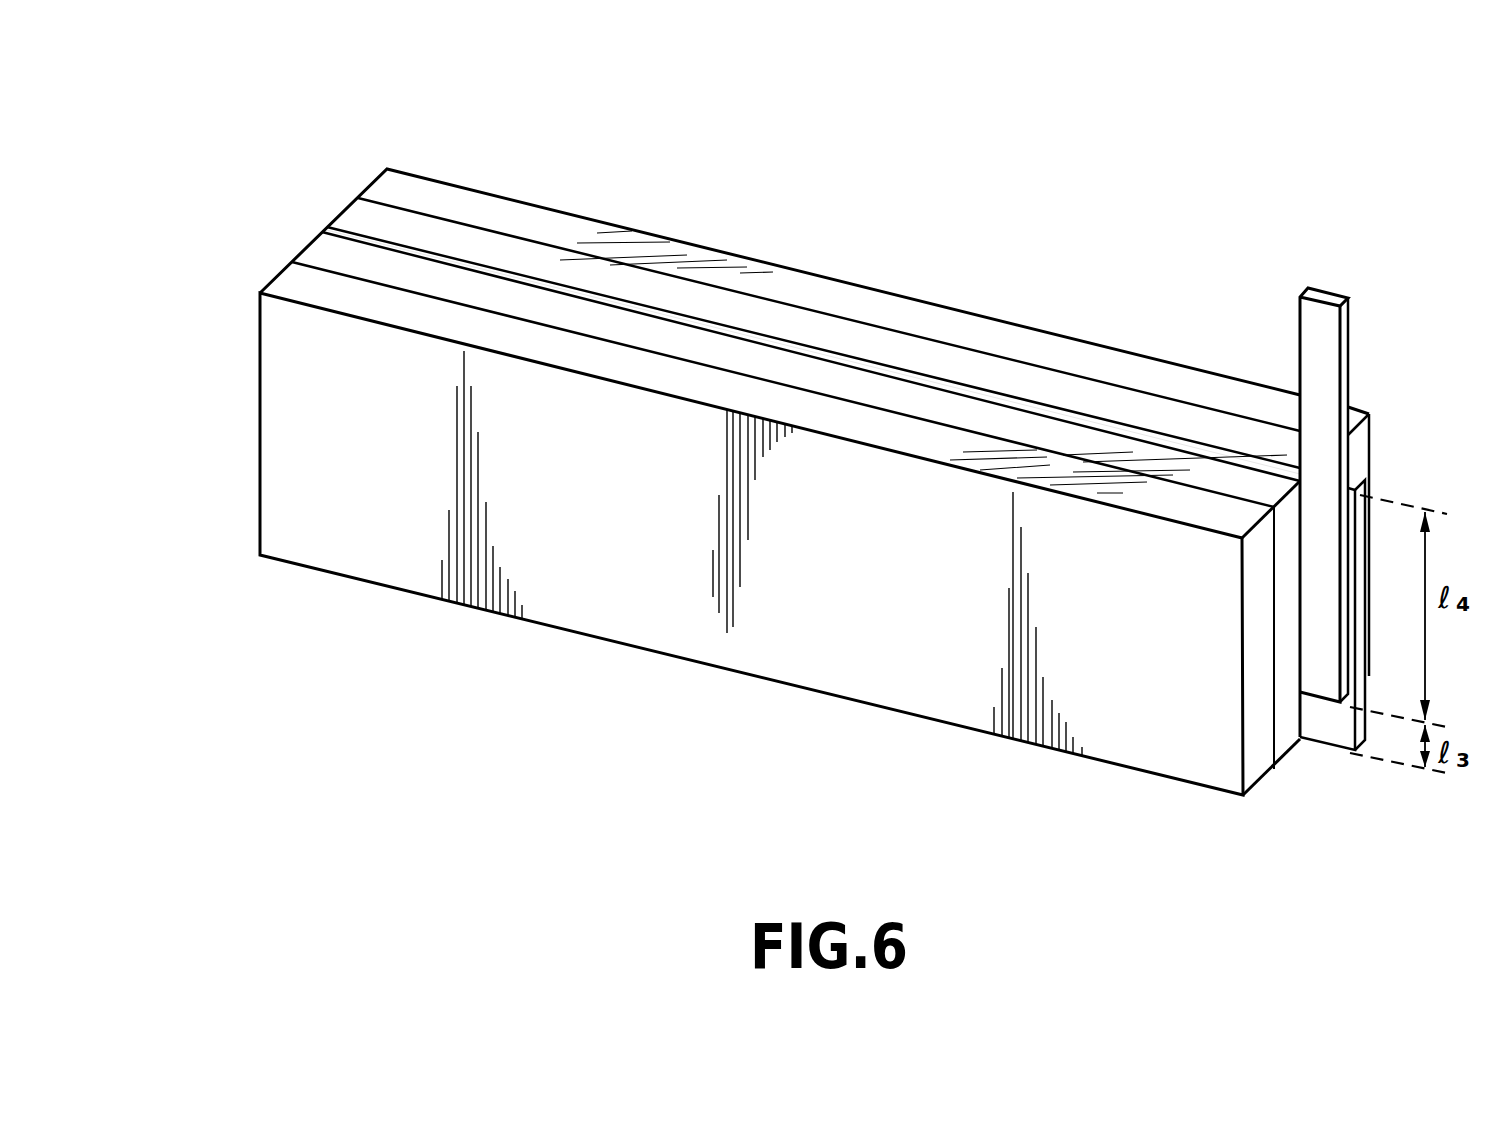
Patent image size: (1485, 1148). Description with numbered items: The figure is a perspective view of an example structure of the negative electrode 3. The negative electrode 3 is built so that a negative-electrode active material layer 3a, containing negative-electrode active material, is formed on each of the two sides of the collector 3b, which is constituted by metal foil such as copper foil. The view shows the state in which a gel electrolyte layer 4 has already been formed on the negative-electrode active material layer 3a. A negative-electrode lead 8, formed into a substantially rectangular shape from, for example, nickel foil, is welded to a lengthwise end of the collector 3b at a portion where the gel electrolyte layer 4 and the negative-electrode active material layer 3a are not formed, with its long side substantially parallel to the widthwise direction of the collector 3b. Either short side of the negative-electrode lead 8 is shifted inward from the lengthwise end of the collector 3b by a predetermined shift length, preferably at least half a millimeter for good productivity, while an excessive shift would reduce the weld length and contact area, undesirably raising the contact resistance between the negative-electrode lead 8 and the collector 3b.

The negative electrode 3 is at (880, 255).
The negative-electrode active material layer 3a is at (355, 215).
The collector 3b is at (333, 235).
The gel electrolyte layer 4 is at (383, 182).
The negative-electrode lead 8 is at (1325, 328).